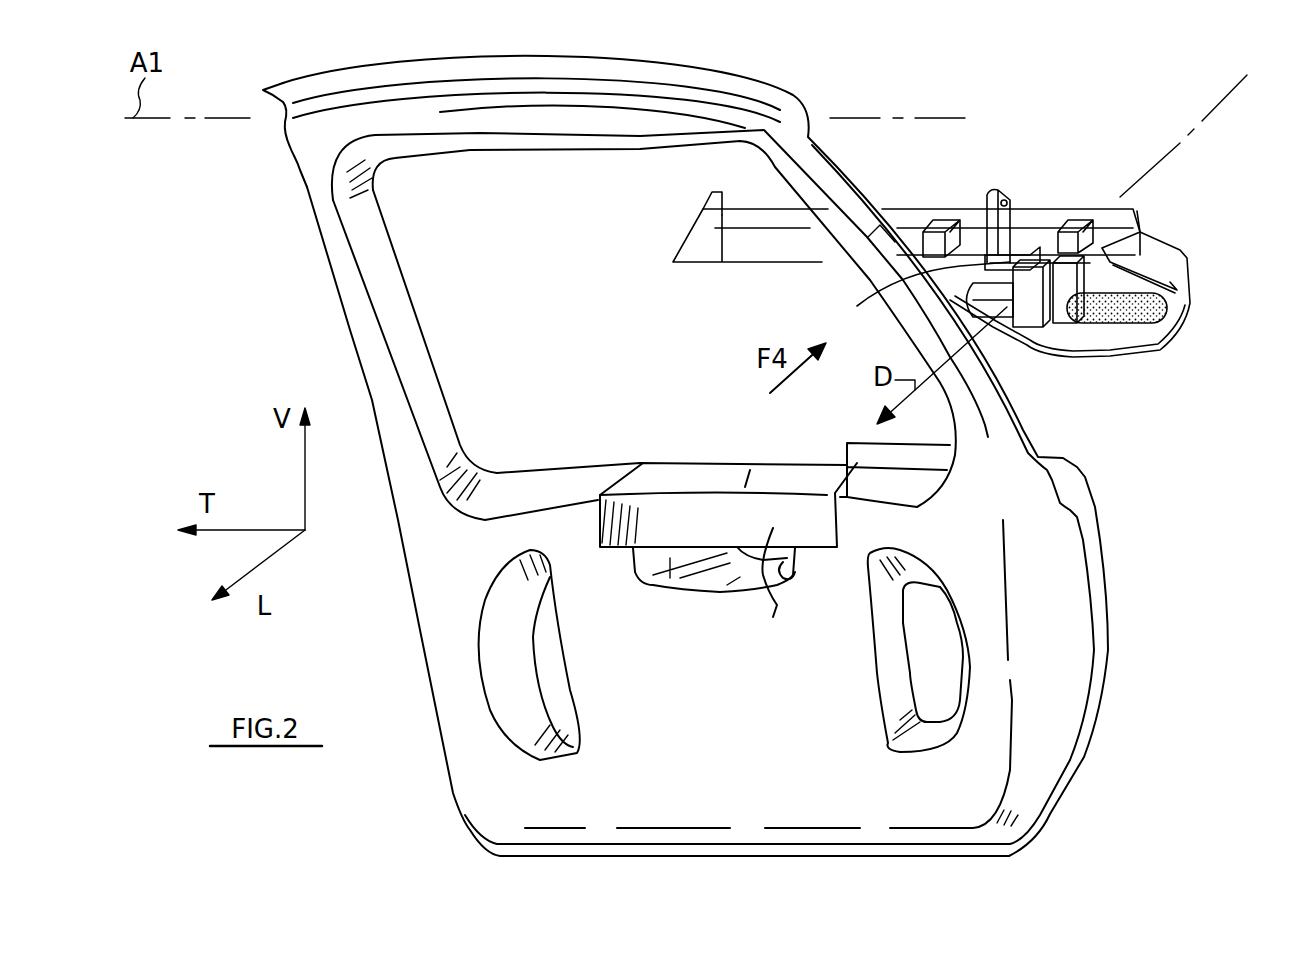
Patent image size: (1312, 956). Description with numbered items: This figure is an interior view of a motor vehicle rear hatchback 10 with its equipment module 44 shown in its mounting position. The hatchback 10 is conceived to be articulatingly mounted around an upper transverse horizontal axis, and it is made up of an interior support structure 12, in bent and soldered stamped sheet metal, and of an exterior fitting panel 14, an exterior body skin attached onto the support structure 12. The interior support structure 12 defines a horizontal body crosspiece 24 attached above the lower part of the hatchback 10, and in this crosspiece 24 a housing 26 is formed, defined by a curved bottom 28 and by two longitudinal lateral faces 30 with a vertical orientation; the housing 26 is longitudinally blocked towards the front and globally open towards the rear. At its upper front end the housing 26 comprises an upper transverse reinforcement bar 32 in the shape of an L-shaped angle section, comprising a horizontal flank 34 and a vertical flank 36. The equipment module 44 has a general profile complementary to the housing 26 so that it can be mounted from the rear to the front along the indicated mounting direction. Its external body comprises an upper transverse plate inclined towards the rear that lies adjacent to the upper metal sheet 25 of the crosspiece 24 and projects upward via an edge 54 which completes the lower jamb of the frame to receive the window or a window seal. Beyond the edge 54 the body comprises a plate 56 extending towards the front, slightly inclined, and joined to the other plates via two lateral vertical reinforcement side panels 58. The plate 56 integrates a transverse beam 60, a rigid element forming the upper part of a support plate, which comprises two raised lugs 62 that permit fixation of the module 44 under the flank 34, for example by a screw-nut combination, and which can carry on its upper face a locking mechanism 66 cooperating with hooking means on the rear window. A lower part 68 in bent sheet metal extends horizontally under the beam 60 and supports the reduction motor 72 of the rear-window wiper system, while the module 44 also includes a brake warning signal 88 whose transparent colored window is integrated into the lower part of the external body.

The hatchback 10 is at (840, 86).
The interior support structure 12 is at (492, 776).
The exterior fitting panel 14 is at (1038, 848).
The horizontal body crosspiece 24 is at (573, 490).
The upper metal sheet 25 is at (873, 485).
The housing 26 is at (725, 592).
The curved bottom 28 is at (697, 583).
The longitudinal lateral faces 30 is at (657, 587).
The upper transverse reinforcement bar 32 is at (668, 452).
The horizontal flank 34 is at (748, 470).
The vertical flank 36 is at (779, 587).
The equipment module 44 is at (1202, 231).
The edge 54 is at (722, 214).
The plate 56 is at (747, 247).
The lateral vertical reinforcement side panels 58 is at (1160, 267).
The transverse beam 60 is at (1033, 228).
The raised lugs 62 is at (953, 227).
The locking mechanism 66 is at (978, 180).
The lower part 68 is at (900, 290).
The reduction motor 72 is at (1066, 343).
The brake warning signal 88 is at (1119, 328).